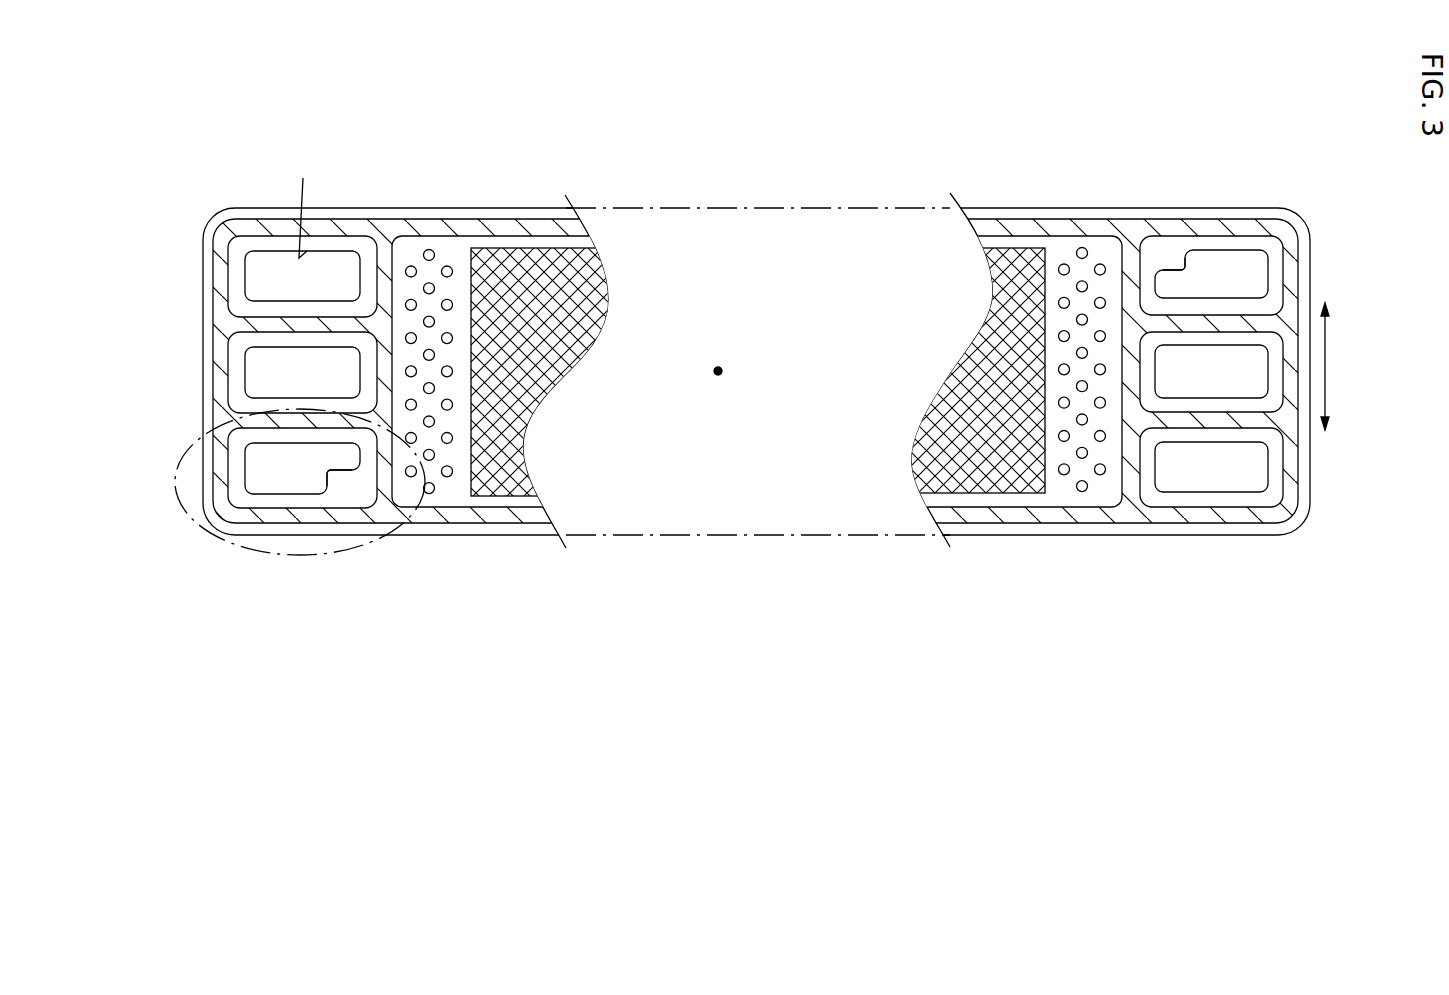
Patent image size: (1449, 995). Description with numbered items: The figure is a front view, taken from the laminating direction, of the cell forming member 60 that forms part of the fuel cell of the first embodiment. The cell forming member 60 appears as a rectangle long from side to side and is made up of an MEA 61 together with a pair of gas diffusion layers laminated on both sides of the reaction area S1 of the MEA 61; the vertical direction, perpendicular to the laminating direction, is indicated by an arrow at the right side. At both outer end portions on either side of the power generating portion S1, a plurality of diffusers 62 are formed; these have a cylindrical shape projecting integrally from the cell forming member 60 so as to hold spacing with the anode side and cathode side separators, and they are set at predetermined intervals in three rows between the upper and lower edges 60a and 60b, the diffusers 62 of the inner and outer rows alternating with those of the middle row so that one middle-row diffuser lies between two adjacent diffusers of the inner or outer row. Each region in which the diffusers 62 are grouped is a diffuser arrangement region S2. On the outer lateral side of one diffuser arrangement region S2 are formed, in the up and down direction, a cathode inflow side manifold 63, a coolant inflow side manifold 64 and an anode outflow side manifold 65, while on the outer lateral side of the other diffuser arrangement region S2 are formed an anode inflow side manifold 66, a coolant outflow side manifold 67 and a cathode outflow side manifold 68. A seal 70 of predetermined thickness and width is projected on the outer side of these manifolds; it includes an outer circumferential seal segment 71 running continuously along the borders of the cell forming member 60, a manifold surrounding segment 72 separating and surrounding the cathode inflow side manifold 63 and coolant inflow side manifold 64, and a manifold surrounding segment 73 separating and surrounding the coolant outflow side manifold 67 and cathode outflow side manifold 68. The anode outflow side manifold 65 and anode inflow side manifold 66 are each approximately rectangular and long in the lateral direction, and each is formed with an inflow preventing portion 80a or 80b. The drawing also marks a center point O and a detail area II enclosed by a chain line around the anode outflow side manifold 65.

The cell forming member 60 is at (258, 207).
The upper edge 60a is at (697, 207).
The lower edge 60b is at (796, 540).
The MEA 61 is at (1000, 230).
The diffusers 62 is at (447, 266).
The cathode inflow side manifold 63 is at (245, 260).
The coolant inflow side manifold 64 is at (248, 380).
The anode outflow side manifold 65 is at (245, 495).
The anode inflow side manifold 66 is at (1222, 250).
The coolant outflow side manifold 67 is at (1240, 395).
The cathode outflow side manifold 68 is at (1203, 493).
The seal 70 is at (477, 213).
The outer circumferential seal segment 71 is at (531, 213).
The manifold surrounding segment 72 is at (364, 310).
The manifold surrounding segment 73 is at (1130, 420).
The inflow preventing portion 80a is at (353, 483).
The inflow preventing portion 80b is at (1173, 262).
The reaction area S1 is at (978, 476).
The diffuser arrangement region S2 is at (405, 247).
The center axis O is at (718, 376).
The section line II is at (293, 556).